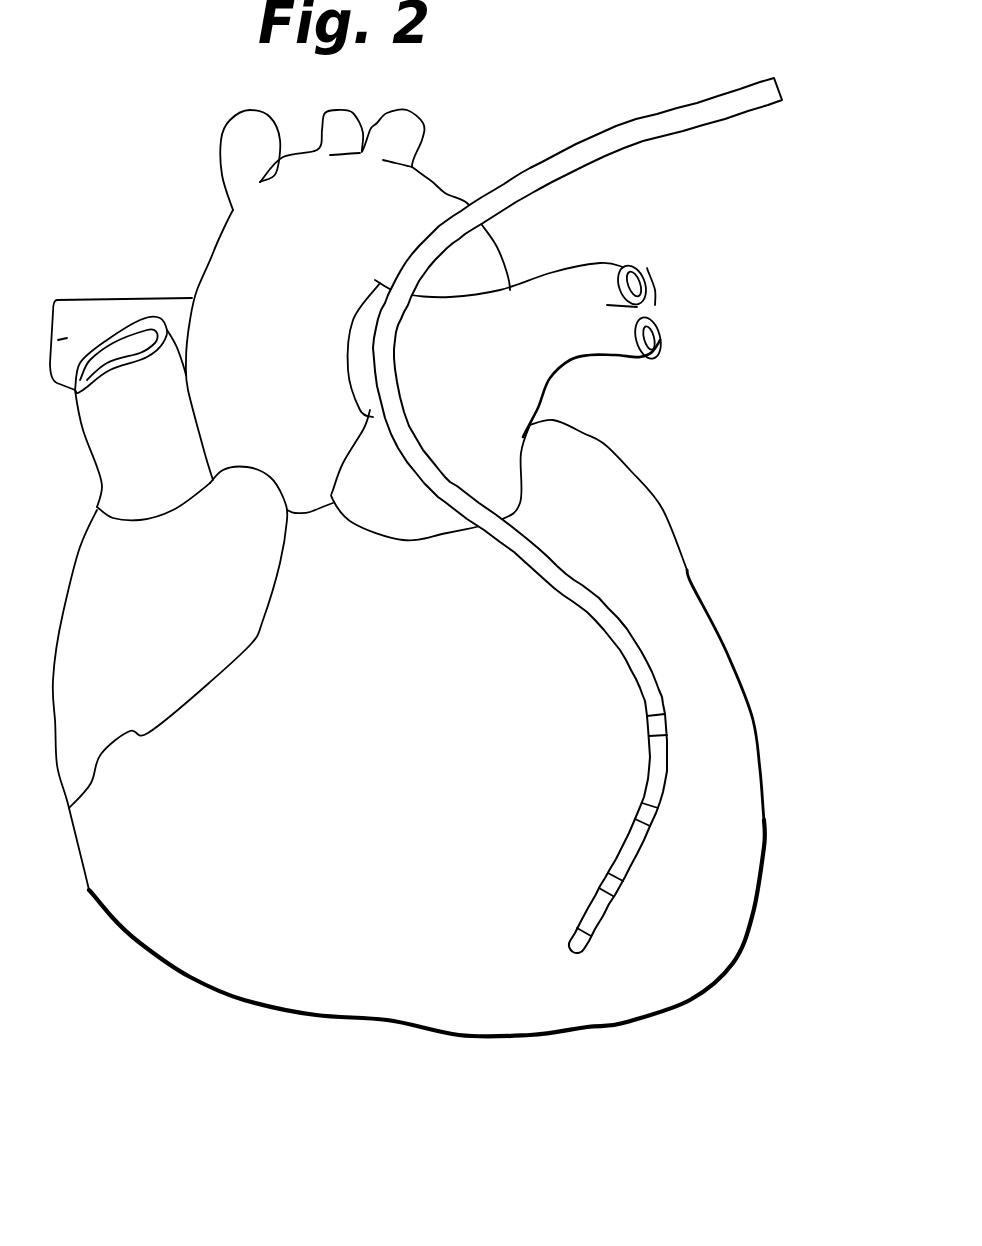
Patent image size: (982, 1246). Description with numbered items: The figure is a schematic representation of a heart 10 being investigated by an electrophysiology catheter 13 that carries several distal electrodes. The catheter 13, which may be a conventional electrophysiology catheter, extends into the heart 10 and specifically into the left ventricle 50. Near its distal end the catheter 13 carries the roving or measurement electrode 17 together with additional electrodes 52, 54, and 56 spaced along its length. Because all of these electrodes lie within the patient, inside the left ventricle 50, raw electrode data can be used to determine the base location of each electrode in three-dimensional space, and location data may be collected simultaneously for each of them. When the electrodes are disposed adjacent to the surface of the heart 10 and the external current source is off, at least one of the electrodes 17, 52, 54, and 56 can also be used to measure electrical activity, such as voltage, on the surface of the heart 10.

The heart 10 is at (630, 470).
The catheter 13 is at (650, 130).
The measurement electrode 17 is at (580, 957).
The left ventricle 50 is at (570, 1037).
The electrode 52 is at (620, 887).
The electrode 54 is at (650, 813).
The electrode 56 is at (663, 720).